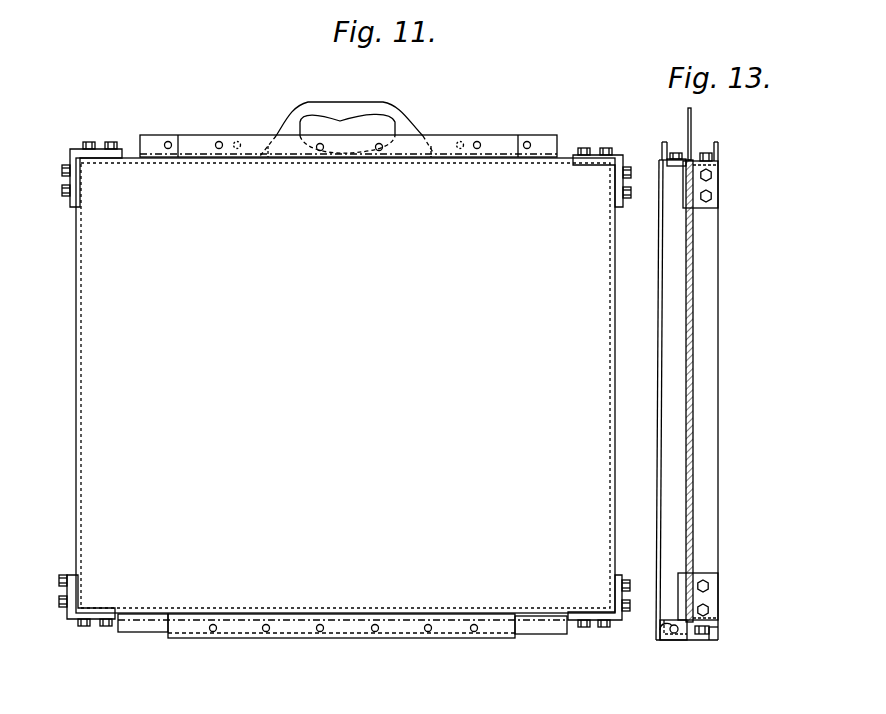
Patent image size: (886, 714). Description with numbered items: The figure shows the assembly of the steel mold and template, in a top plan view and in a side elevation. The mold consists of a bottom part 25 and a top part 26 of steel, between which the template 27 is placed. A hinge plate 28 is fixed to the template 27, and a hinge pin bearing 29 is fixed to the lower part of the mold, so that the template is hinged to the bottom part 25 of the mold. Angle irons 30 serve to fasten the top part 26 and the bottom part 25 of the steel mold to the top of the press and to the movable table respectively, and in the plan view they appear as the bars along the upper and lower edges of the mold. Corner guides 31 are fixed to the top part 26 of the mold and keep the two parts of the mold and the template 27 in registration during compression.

In FIG. 13, the bottom part of the steel mold 25 is at (663, 350).
In FIG. 13, the top part of the steel mold 26 is at (710, 304).
In FIG. 13, the template 27 is at (692, 252).
In FIG. 13, the hinge plate 28 is at (684, 636).
In FIG. 13, the hinge pin bearing 29 is at (668, 645).
In FIG. 11, the angle irons 30 is at (500, 147).
In FIG. 13, the angle irons 30 is at (658, 162).
In FIG. 11, the corner guides 31 is at (97, 153).